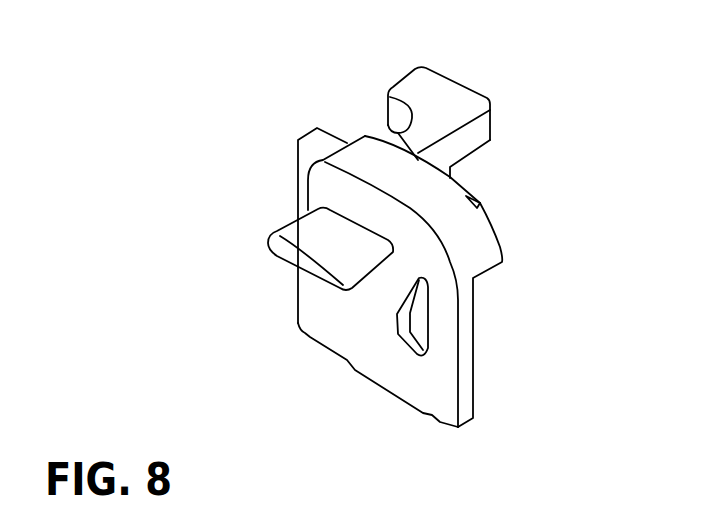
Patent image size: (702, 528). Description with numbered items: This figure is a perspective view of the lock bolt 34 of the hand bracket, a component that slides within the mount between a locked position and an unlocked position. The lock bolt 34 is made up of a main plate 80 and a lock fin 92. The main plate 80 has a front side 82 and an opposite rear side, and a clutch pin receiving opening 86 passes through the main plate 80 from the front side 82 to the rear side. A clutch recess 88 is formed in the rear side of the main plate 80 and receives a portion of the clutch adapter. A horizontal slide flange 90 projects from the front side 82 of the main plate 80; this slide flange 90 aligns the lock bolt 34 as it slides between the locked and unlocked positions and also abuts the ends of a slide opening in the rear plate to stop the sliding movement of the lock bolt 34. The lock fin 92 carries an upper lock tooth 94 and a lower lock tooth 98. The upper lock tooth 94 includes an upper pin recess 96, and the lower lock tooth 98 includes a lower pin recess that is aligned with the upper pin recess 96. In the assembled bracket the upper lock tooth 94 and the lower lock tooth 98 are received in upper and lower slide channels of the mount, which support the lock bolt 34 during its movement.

The lock bolt 34 is at (235, 128).
The main plate 80 is at (400, 360).
The front side 82 is at (333, 320).
The clutch pin receiving opening 86 is at (420, 328).
The clutch recess 88 is at (493, 299).
The horizontal slide flange 90 is at (282, 245).
The lock fin 92 is at (477, 69).
The upper lock tooth 94 is at (497, 130).
The upper pin recess 96 is at (378, 127).
The lower lock tooth 98 is at (488, 202).